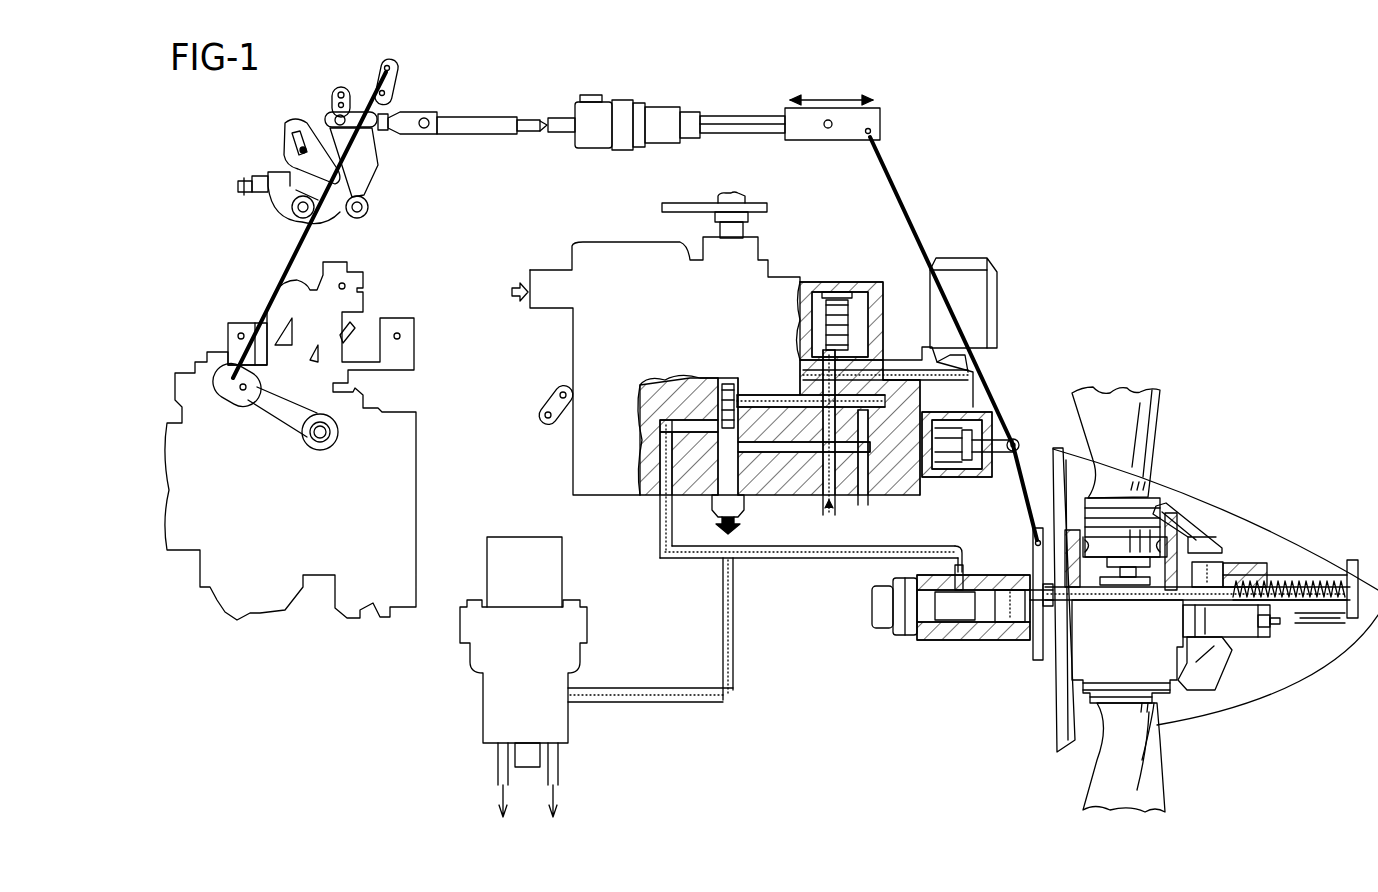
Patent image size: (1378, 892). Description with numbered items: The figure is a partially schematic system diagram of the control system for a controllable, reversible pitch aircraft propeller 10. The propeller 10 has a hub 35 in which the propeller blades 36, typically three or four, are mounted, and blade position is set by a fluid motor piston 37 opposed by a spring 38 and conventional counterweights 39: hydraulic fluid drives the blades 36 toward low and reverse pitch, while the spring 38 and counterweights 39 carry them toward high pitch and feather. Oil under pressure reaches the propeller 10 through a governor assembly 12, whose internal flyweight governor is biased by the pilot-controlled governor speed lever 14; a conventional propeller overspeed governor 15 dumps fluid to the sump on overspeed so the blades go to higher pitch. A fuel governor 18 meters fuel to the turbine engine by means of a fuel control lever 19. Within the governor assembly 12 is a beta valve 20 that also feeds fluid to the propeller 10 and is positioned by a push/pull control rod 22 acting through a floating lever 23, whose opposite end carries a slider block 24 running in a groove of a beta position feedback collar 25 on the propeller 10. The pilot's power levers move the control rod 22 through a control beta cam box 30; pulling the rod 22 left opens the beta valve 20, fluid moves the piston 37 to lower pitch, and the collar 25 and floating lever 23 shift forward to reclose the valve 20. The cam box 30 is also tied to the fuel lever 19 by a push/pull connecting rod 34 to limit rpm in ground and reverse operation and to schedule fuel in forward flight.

The controllable, reversible pitch aircraft propeller 10 is at (1172, 444).
The governor assembly 12 is at (573, 332).
The governor speed lever 14 is at (683, 203).
The propeller overspeed governor 15 is at (525, 546).
The fuel governor 18 is at (416, 452).
The fuel control lever 19 is at (280, 425).
The beta valve 20 is at (1030, 440).
The push/pull control rod 22 is at (722, 114).
The floating lever 23 is at (907, 205).
The slider brush or block 24 is at (1028, 552).
The beta position feedback collar 25 is at (1033, 643).
The control beta cam box 30 is at (308, 108).
The push/pull connecting rod 34 is at (298, 240).
The hub 35 is at (1090, 665).
The propeller blades 36 is at (1115, 395).
The fluid motor piston 37 is at (1240, 578).
The spring 38 is at (1318, 592).
The counterweights 39 is at (1207, 530).